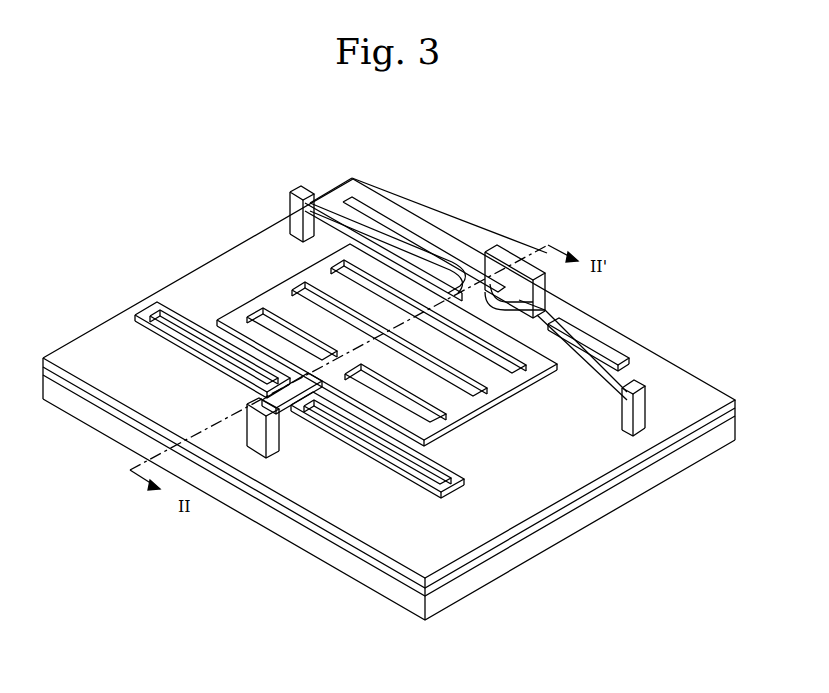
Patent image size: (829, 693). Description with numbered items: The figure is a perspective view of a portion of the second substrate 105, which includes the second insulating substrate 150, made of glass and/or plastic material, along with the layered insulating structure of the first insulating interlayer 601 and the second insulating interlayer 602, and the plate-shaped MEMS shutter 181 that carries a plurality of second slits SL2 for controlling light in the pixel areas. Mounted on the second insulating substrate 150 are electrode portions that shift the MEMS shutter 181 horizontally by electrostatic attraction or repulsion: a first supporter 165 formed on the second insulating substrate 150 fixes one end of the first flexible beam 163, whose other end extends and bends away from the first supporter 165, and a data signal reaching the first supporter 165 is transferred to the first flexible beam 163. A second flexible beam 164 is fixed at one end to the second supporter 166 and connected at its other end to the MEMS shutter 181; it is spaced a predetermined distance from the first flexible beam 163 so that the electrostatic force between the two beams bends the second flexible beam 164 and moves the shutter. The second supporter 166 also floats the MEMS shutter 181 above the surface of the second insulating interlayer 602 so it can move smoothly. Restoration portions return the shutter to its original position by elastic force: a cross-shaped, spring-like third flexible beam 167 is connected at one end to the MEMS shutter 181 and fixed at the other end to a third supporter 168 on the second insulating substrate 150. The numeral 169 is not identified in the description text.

The second substrate 105 is at (385, 177).
The second insulating substrate 150 is at (740, 430).
The first flexible beam 163 is at (410, 235).
The second flexible beam 164 is at (332, 207).
The first supporter 165 is at (500, 253).
The second supporter 166 is at (293, 224).
The third flexible beam 167 is at (162, 346).
The third supporter 168 is at (262, 432).
The movable plate 169 is at (515, 377).
The MEMS shutter 181 is at (695, 500).
The first insulating interlayer 601 is at (737, 410).
The second insulating interlayer 602 is at (737, 400).
The second slits SL2 is at (453, 404).